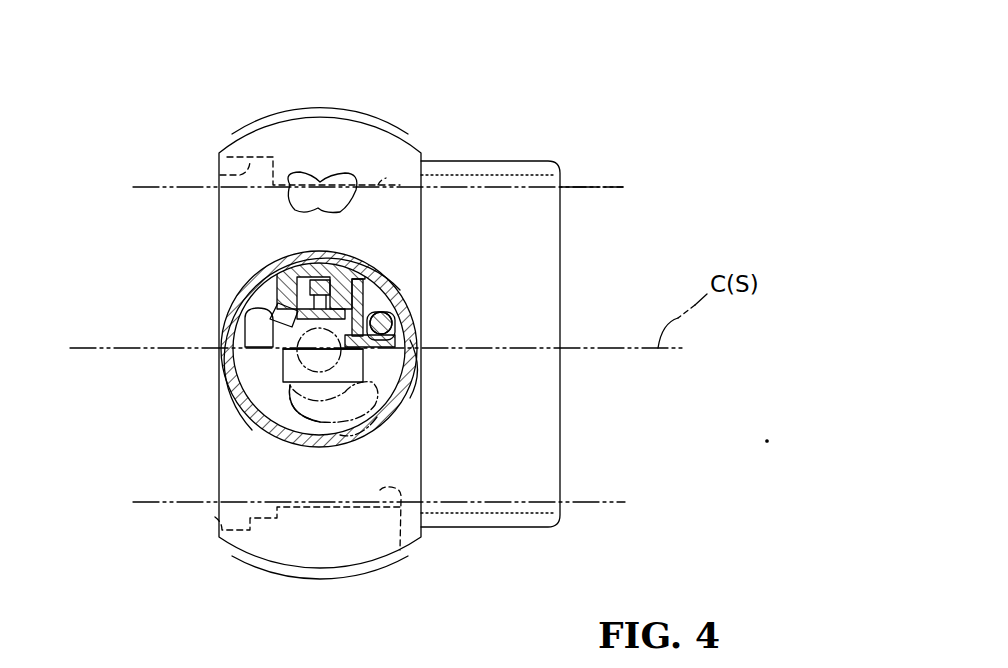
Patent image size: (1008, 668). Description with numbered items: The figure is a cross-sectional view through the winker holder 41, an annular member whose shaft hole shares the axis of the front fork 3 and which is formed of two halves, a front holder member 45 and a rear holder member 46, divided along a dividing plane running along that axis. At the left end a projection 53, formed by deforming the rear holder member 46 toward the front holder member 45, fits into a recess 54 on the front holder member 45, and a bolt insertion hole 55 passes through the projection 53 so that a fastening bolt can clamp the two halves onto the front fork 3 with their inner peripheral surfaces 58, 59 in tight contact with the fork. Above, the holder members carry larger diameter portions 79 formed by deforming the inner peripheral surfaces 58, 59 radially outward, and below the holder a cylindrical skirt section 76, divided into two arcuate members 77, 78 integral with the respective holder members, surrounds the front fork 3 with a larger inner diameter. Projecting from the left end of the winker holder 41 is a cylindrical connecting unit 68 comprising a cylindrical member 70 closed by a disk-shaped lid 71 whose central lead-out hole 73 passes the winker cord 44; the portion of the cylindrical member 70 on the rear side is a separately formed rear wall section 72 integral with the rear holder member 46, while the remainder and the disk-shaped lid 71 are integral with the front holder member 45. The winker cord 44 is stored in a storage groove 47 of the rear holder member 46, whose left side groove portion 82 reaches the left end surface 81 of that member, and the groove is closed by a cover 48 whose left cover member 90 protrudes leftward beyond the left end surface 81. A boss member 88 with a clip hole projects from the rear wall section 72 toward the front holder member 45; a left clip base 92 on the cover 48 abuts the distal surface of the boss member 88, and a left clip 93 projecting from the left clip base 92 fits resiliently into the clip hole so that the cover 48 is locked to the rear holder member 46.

The front fork 3 is at (588, 186).
The winker holder 41 is at (292, 114).
The winker cord 44 is at (415, 322).
The front holder member 45 is at (258, 562).
The rear holder member 46 is at (243, 126).
The storage groove 47 is at (457, 325).
The cover 48 is at (413, 367).
The projection 53 is at (318, 316).
The recess 54 is at (224, 408).
The bolt insertion hole 55 is at (354, 188).
The inner peripheral surface 58 is at (400, 550).
The inner peripheral surface 59 is at (378, 185).
The connecting unit 68 is at (219, 324).
The cylindrical member 70 is at (410, 398).
The disk-shaped lid 71 is at (255, 272).
The rear wall section 72 is at (400, 290).
The lead-out hole 73 is at (377, 417).
The skirt section 76 is at (478, 159).
The arcuate member 77 is at (513, 528).
The arcuate member 78 is at (510, 160).
The larger diameter portion 79 is at (220, 175).
The left end surface 81 is at (410, 290).
The left side groove portion 82 is at (415, 332).
The boss member 88 is at (378, 298).
The left cover member 90 is at (415, 368).
The left clip base 92 is at (290, 366).
The left clip 93 is at (300, 270).